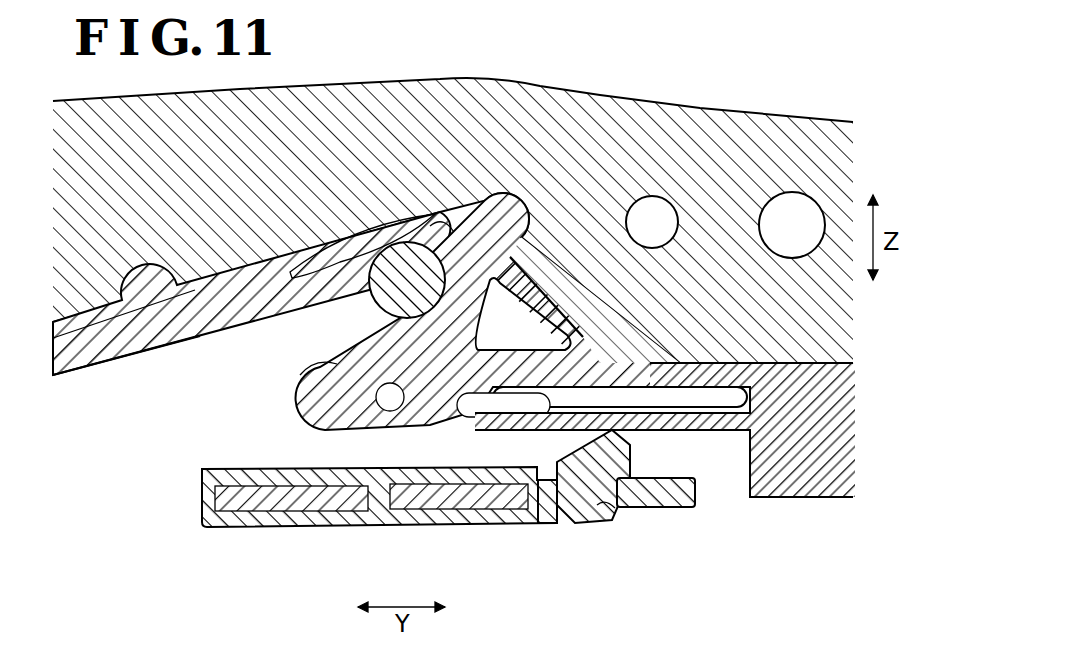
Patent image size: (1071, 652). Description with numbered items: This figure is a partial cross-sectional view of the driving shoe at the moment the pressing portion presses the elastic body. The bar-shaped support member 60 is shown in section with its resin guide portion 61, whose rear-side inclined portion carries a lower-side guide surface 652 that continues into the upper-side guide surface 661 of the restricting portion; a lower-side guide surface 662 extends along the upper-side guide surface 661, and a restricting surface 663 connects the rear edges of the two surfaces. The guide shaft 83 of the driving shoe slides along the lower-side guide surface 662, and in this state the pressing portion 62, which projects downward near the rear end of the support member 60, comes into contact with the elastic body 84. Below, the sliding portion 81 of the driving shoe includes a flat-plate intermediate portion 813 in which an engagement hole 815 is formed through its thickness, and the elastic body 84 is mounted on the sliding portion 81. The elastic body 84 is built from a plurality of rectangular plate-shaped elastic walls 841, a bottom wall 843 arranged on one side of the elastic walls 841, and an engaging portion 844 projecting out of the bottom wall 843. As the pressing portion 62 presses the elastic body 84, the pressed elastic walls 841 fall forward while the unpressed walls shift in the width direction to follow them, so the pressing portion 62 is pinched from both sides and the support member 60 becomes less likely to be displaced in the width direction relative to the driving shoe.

The support member 60 is at (604, 95).
The guide portion 61 is at (83, 372).
The pressing portion 62 is at (500, 435).
The lower-side guide surface 652 is at (146, 352).
The upper-side guide surface 661 is at (300, 262).
The lower-side guide surface 662 is at (312, 362).
The restricting surface 663 is at (440, 232).
The sliding portion 81 is at (290, 530).
The intermediate portion 813 is at (700, 498).
The engagement hole 815 is at (603, 508).
The guide shaft 83 is at (400, 243).
The elastic body 84 is at (615, 516).
The elastic walls 841 is at (573, 437).
The bottom wall 843 is at (633, 470).
The engaging portion 844 is at (588, 525).